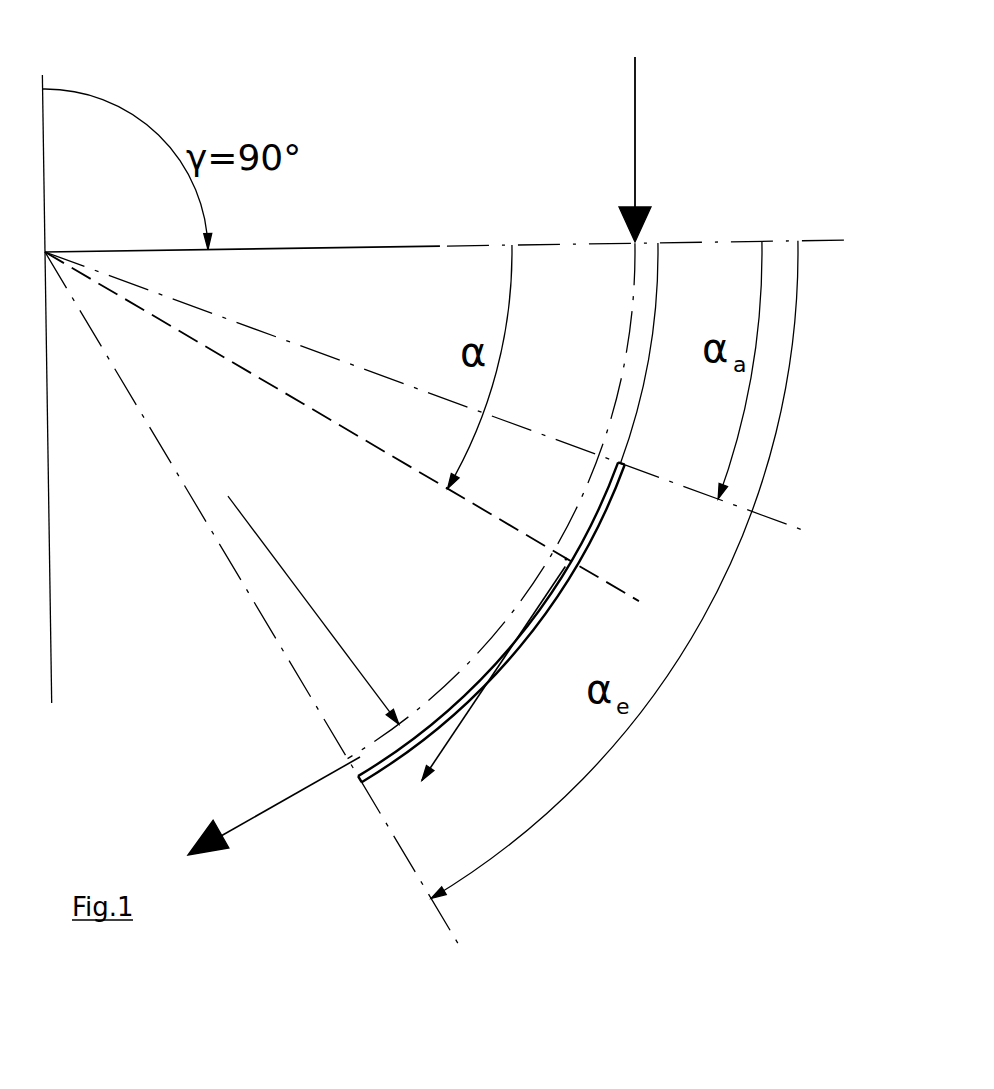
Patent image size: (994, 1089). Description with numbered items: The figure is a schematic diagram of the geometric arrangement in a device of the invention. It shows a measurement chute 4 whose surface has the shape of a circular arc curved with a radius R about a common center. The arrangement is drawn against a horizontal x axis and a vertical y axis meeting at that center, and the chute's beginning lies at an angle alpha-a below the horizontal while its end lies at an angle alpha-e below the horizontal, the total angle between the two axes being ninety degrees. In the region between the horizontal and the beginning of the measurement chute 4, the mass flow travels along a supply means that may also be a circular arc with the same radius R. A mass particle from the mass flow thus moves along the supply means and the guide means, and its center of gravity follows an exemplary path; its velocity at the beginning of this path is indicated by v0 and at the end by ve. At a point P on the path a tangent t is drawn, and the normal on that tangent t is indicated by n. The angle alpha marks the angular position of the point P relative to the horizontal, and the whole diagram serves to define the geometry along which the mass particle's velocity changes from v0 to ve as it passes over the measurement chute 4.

The measurement chute 4 is at (543, 621).
The point of the path P is at (556, 554).
The x axis x is at (447, 226).
The y axis y is at (61, 389).
The normal n is at (342, 426).
The radius R is at (313, 610).
The tangent t is at (494, 674).
The velocity at the beginning v0 is at (645, 149).
The velocity at the end ve is at (274, 806).